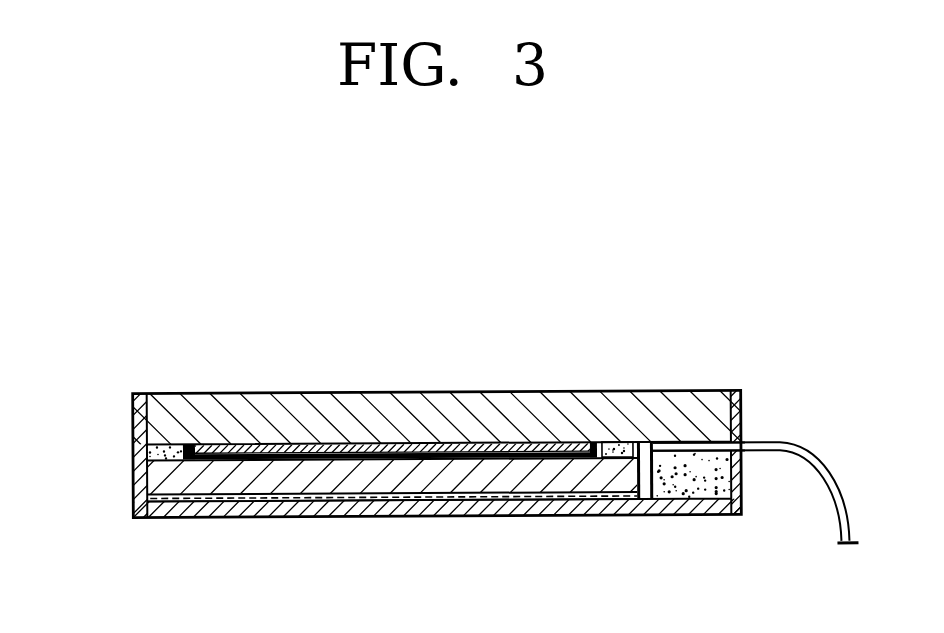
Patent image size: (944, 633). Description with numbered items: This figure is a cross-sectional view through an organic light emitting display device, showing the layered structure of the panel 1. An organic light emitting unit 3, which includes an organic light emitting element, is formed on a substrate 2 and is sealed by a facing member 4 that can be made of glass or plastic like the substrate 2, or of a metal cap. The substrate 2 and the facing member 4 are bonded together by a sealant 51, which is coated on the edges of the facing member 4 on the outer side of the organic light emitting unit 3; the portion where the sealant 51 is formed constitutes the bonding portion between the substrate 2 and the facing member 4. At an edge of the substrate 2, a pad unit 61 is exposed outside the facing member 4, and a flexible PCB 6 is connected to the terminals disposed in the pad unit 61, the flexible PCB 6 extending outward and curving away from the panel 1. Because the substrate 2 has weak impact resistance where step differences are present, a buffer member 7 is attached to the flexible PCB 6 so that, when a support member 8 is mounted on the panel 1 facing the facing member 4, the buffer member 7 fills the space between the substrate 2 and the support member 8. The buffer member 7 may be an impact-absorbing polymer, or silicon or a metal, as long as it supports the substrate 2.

The panel 1 is at (140, 331).
The substrate 2 is at (157, 415).
The organic light emitting unit 3 is at (307, 446).
The facing member 4 is at (157, 482).
The sealant 51 is at (153, 452).
The flexible PCB 6 is at (755, 432).
The pad unit 61 is at (710, 443).
The buffer member 7 is at (674, 487).
The support member 8 is at (584, 505).